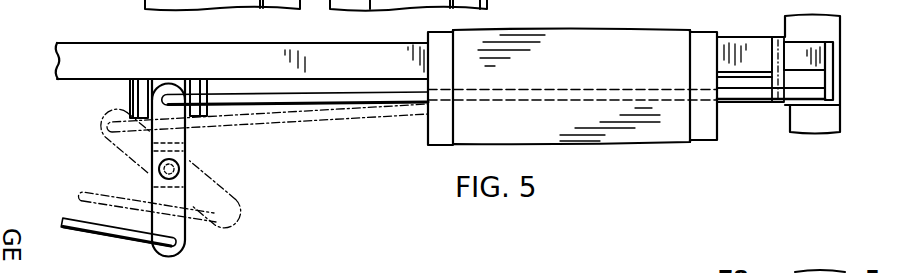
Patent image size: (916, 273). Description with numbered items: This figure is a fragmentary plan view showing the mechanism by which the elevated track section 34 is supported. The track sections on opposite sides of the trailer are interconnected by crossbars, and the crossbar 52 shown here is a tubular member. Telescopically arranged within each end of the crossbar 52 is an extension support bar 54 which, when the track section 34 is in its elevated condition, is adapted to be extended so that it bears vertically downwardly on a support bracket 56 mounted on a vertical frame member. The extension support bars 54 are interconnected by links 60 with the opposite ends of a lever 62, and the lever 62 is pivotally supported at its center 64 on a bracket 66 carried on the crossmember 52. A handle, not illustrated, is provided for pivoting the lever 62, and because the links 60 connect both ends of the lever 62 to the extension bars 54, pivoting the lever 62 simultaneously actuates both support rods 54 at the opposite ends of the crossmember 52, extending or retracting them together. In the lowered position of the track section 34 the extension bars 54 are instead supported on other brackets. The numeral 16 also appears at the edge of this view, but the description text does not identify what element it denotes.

The frame (partial, adjacent figure) 16 is at (23, 6).
The track section 34 is at (630, 40).
The crossbar 52 is at (57, 60).
The extension support bar 54 is at (812, 50).
The support bracket 56 is at (822, 118).
The link 60 is at (91, 232).
The lever 62 is at (177, 200).
The center 64 is at (186, 167).
The bracket 66 is at (130, 98).